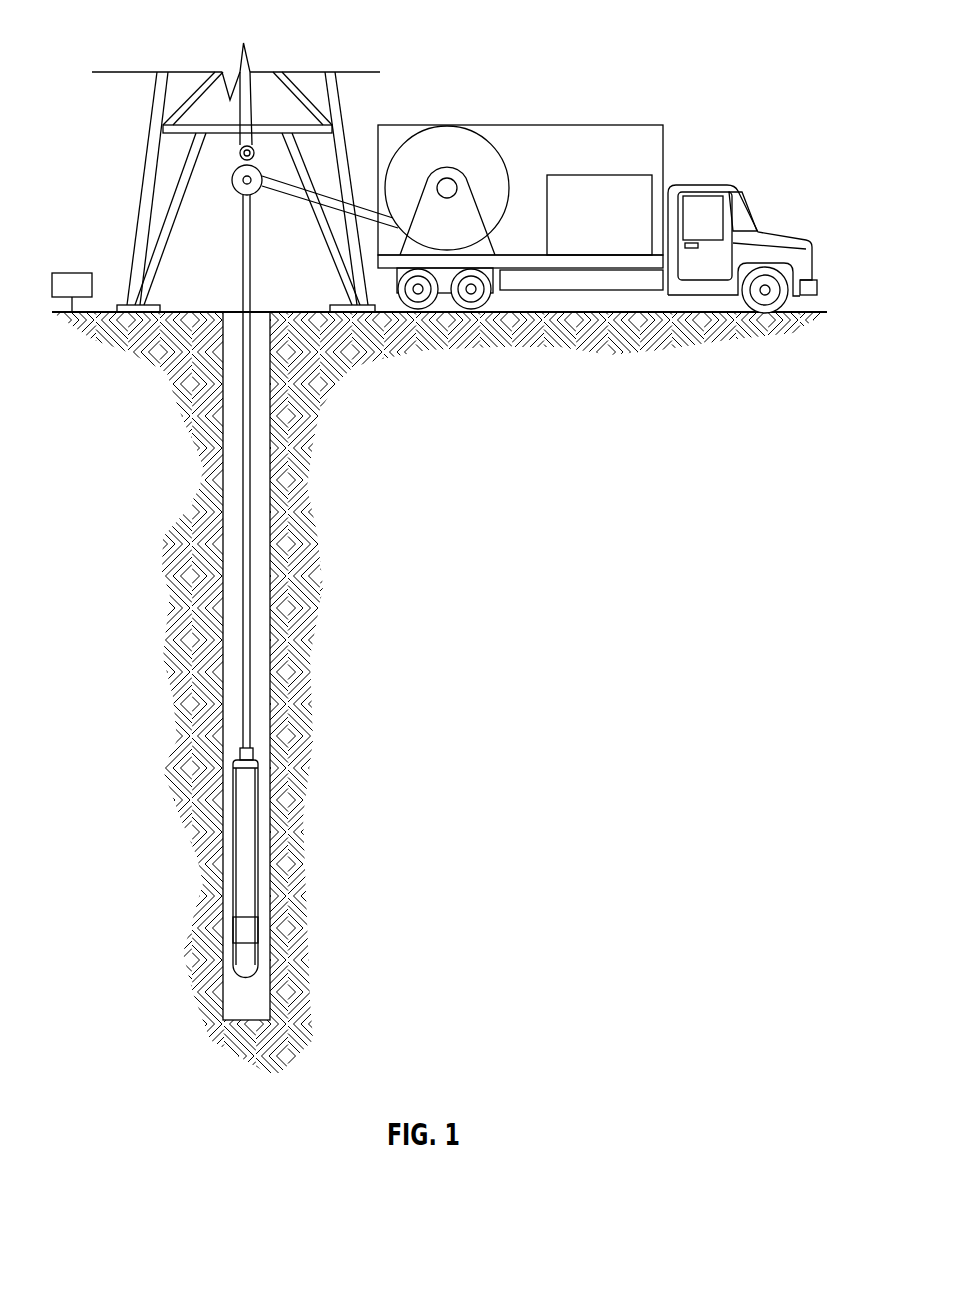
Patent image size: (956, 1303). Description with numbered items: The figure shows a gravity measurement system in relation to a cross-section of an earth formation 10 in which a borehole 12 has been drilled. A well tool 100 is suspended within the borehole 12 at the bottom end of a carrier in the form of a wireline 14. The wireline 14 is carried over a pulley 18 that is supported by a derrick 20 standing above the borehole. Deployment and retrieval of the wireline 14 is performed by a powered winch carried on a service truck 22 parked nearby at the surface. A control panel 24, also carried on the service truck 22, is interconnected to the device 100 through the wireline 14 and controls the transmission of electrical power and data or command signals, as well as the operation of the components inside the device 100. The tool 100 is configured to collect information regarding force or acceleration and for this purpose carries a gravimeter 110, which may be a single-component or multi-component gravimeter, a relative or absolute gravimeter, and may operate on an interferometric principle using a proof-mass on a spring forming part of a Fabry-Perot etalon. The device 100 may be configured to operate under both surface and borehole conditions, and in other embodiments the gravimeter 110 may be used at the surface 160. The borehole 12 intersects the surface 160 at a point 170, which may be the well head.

The earth formation 10 is at (308, 560).
The borehole 12 is at (222, 483).
The wireline 14 is at (250, 465).
The pulley 18 is at (242, 193).
The derrick 20 is at (147, 140).
The service truck 22 is at (522, 123).
The control panel 24 is at (600, 175).
The well tool 100 is at (235, 873).
The gravimeter 110 is at (250, 930).
The surface 160 is at (93, 322).
The point 170 is at (72, 273).